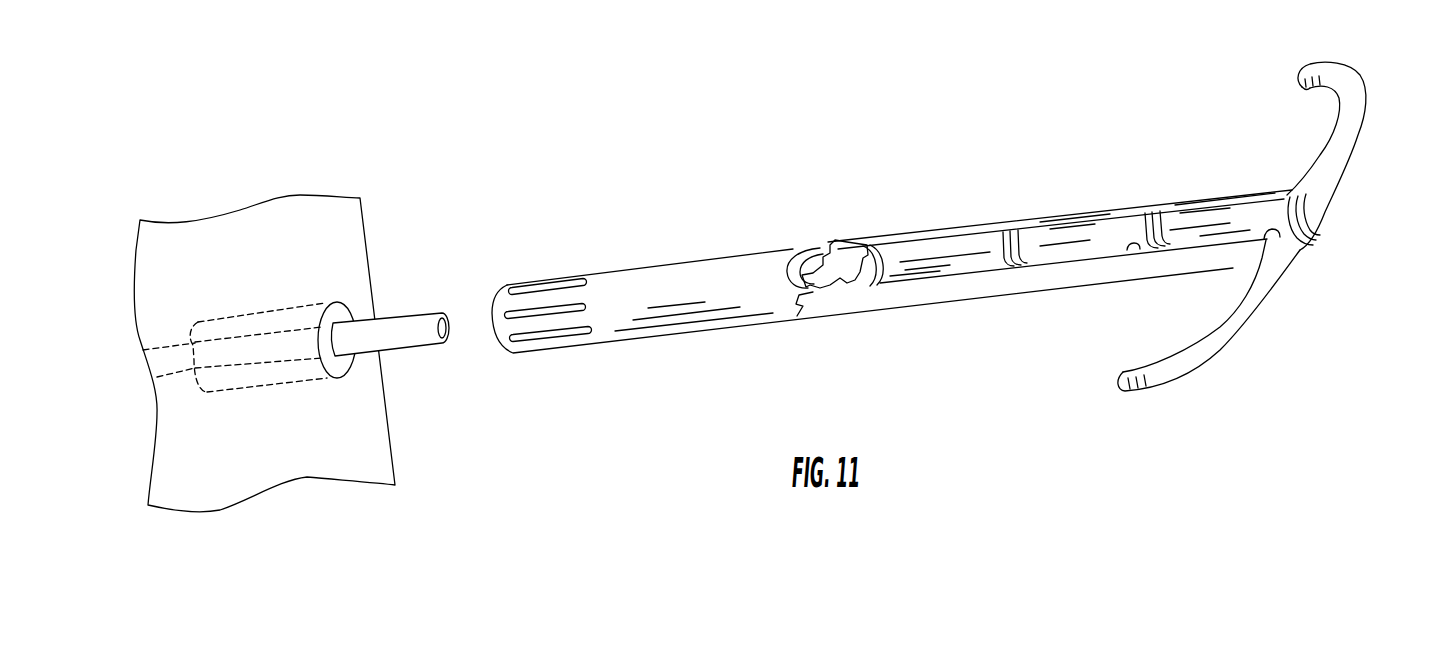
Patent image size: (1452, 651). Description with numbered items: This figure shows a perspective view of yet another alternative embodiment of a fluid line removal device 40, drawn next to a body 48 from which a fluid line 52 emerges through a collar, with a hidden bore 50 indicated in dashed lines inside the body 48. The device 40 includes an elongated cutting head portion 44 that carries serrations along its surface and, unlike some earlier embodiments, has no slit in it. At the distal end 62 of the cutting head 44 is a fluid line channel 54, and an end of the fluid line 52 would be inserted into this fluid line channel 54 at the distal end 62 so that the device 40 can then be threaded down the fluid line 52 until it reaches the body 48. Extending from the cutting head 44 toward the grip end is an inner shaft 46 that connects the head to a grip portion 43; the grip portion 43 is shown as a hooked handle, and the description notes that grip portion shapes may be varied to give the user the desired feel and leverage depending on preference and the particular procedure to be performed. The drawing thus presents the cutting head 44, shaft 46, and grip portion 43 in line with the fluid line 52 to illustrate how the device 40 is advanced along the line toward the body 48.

The fluid line removal device 40 is at (1147, 135).
The grip portion 43 is at (1360, 118).
The cutting head portion 44 is at (648, 272).
The inner shaft 46 is at (1040, 283).
The body 48 is at (313, 475).
The hidden bore 50 is at (312, 382).
The fluid line 52 is at (380, 327).
The fluid line channel 54 is at (845, 261).
The distal end 62 is at (507, 283).